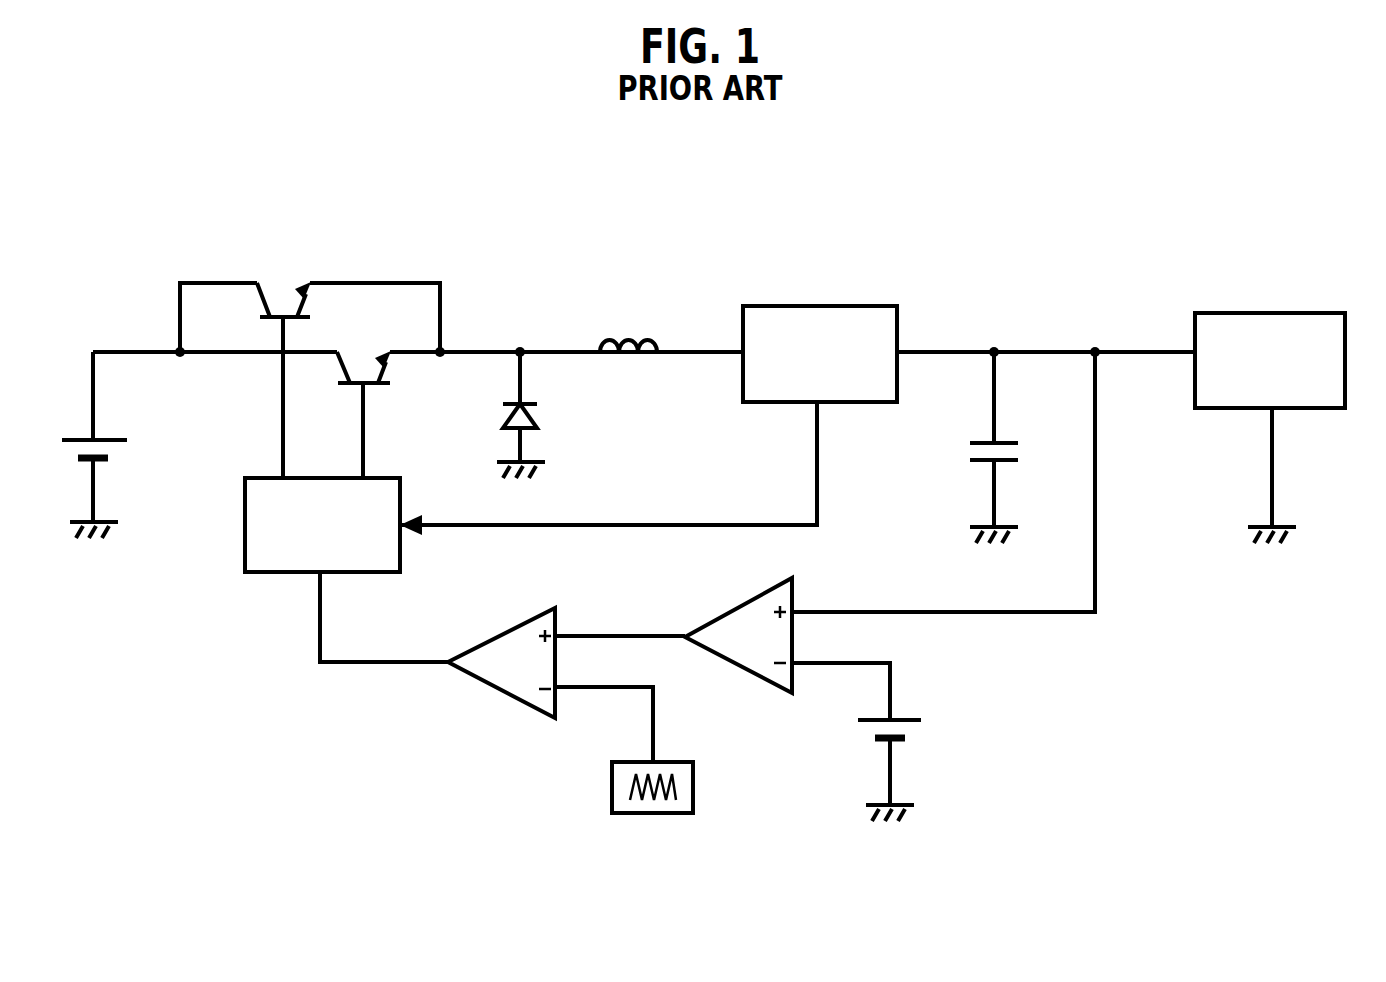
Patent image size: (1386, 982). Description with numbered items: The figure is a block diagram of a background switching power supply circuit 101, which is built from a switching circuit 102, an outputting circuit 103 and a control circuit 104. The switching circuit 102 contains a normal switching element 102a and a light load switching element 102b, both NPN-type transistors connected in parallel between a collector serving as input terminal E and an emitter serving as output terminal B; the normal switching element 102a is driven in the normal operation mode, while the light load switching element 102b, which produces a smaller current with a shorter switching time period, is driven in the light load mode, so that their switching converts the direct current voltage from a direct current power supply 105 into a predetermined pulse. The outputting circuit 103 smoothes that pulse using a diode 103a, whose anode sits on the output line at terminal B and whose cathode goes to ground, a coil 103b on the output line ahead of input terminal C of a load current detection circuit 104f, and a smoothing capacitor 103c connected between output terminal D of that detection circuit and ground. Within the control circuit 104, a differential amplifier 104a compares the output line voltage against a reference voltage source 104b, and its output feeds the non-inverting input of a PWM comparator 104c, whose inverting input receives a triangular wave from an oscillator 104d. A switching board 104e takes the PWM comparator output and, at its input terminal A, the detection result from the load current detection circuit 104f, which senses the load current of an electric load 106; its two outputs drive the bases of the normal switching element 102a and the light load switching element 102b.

The switching power supply circuit 101 is at (984, 190).
The switching circuit 102 is at (400, 265).
The normal switching element 102a is at (350, 363).
The light load switching element 102b is at (268, 300).
The outputting circuit 103 is at (578, 292).
The diode 103a is at (500, 416).
The coil 103b is at (627, 368).
The smoothing capacitor 103c is at (950, 463).
The control circuit 104 is at (432, 723).
The differential amplifier 104a is at (740, 606).
The reference voltage source 104b is at (846, 740).
The PWM comparator 104c is at (500, 632).
The oscillator 104d is at (612, 788).
The switching board 104e is at (245, 522).
The load current detection circuit 104f is at (795, 306).
The direct current power supply 105 is at (70, 428).
The electric load 106 is at (1245, 313).